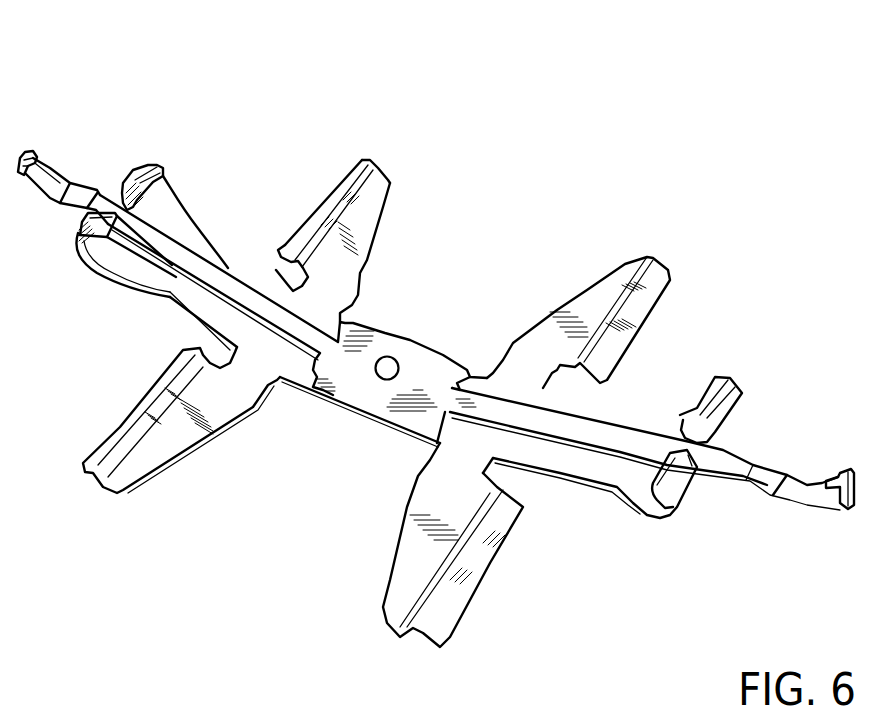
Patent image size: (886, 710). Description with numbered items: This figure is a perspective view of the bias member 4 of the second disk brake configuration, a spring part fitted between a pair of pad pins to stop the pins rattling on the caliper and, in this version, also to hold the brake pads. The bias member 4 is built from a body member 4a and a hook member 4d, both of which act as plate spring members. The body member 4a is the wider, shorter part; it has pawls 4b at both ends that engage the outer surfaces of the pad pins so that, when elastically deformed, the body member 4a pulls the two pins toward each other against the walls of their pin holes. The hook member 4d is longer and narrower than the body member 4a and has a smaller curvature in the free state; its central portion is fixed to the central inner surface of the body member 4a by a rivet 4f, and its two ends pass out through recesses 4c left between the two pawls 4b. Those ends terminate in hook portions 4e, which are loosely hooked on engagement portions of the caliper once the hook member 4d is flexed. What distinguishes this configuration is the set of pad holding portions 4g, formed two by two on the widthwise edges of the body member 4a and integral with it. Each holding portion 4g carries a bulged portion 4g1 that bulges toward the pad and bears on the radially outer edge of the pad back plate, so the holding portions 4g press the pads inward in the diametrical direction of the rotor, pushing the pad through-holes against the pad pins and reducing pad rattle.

The bias member 4 is at (270, 114).
The body member 4a is at (221, 258).
The pawls 4b is at (163, 168).
The recesses 4c is at (112, 292).
The hook member 4d is at (103, 200).
The hook portions 4e is at (26, 152).
The rivet 4f is at (392, 362).
The pad holding portions 4g is at (367, 211).
The bulged portions 4g1 is at (368, 162).